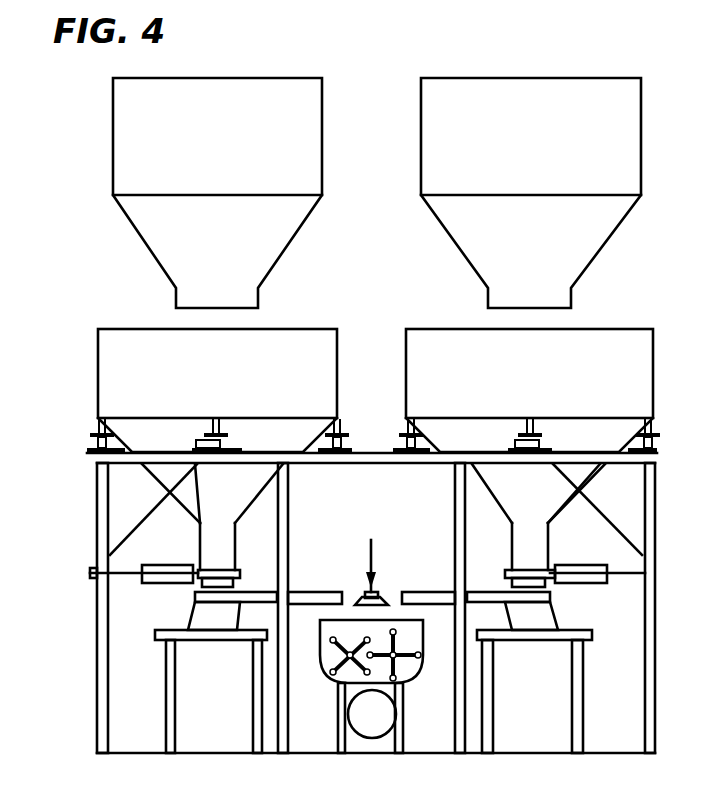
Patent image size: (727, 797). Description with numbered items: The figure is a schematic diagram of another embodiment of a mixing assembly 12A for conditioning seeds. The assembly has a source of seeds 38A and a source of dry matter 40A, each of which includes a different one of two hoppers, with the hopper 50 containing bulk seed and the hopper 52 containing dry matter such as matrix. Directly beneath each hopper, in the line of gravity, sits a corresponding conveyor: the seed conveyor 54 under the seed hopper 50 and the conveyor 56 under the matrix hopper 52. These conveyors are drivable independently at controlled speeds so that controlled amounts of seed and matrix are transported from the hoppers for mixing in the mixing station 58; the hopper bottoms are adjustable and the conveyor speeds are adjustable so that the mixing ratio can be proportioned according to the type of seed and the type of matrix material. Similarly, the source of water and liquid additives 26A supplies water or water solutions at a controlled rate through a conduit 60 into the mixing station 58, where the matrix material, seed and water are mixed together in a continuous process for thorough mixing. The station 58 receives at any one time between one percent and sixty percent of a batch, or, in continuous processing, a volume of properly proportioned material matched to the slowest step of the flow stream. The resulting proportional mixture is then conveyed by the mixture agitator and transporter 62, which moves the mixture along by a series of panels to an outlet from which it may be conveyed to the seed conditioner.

The mixing assembly 12A is at (78, 173).
The source of dry matter 40A is at (142, 271).
The source of seeds 38A is at (446, 262).
The hopper 52 is at (125, 350).
The hopper 50 is at (440, 350).
The conveyor 56 is at (192, 612).
The seed conveyor 54 is at (565, 615).
The source of water and liquid additives 26A is at (390, 496).
The mixing station 58 is at (347, 582).
The conduit 60 is at (378, 553).
The mixture agitator and transporter 62 is at (410, 683).